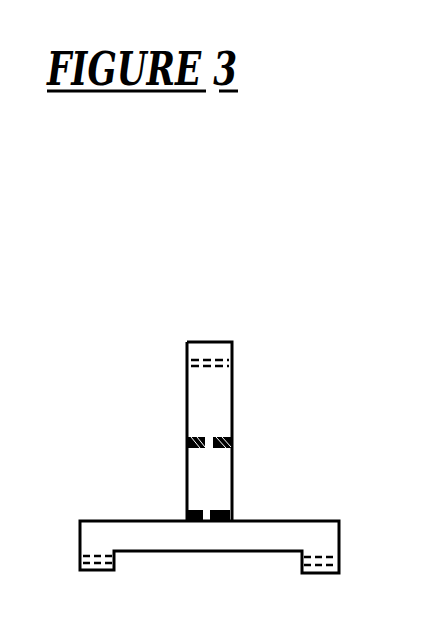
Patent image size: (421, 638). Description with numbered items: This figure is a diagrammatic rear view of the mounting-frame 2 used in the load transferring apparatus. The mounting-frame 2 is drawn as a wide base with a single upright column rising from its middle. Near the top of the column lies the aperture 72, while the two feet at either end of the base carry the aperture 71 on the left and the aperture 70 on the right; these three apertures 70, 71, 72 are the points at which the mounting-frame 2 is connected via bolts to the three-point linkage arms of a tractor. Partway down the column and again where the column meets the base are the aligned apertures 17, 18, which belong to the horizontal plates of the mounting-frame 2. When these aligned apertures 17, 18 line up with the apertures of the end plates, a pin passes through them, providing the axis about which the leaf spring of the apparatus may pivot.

The mounting-frame 2 is at (265, 536).
The aligned aperture 17 is at (216, 440).
The aligned aperture 18 is at (211, 512).
The aperture 70 is at (342, 563).
The aperture 71 is at (114, 553).
The aperture 72 is at (232, 362).